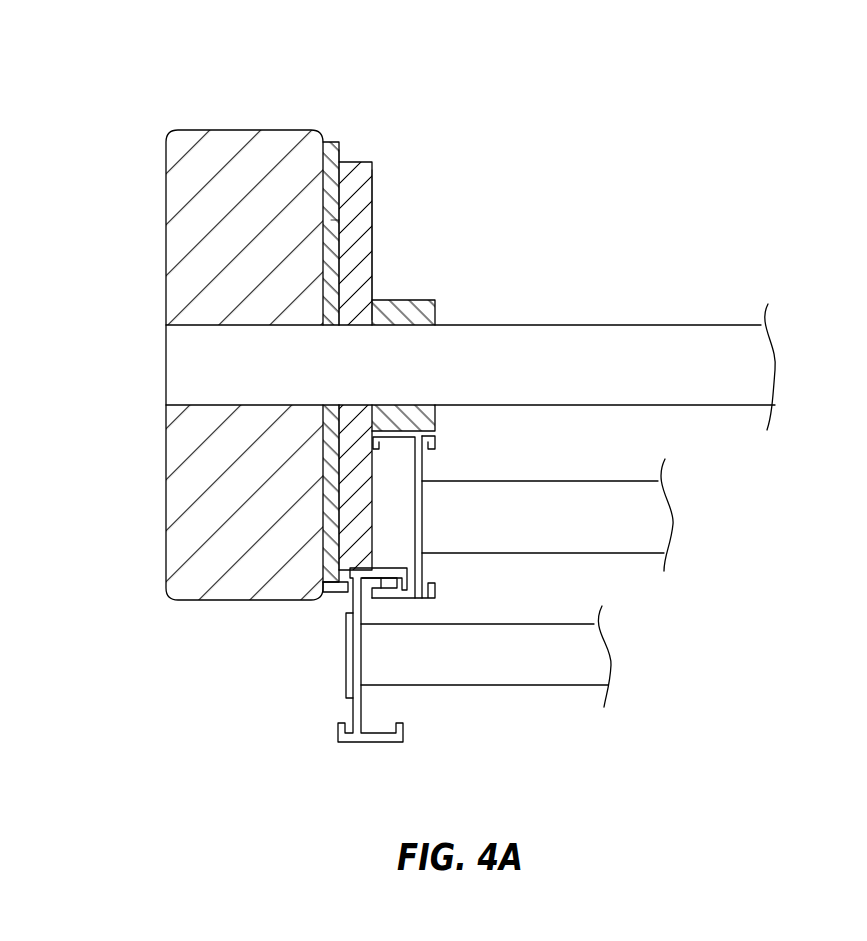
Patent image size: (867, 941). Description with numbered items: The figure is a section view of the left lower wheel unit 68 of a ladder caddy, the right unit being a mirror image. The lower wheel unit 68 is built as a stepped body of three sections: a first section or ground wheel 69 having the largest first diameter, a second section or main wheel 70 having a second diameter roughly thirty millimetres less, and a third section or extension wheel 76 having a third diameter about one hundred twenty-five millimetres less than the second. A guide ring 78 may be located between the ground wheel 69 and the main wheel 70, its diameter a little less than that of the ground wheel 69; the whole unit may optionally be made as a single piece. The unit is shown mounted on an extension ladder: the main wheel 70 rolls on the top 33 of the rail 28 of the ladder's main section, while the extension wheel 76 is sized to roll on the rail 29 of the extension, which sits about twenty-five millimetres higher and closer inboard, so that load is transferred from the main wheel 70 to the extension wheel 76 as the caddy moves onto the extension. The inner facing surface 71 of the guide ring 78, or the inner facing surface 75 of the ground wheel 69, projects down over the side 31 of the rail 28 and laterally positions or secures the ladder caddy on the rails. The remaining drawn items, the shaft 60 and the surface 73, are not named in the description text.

The rail 28 is at (350, 603).
The rail 29 is at (422, 466).
The side of the rail 31 is at (345, 590).
The top of the rail 33 is at (392, 568).
The shaft 60 is at (660, 347).
The lower wheel unit 68 is at (555, 146).
The ground wheel 69 is at (229, 131).
The main wheel 70 is at (356, 161).
The inner facing surface 71 is at (323, 136).
The outer surface 73 is at (373, 275).
The inner facing surface 75 is at (341, 148).
The extension wheel 76 is at (408, 317).
The guide ring 78 is at (331, 220).